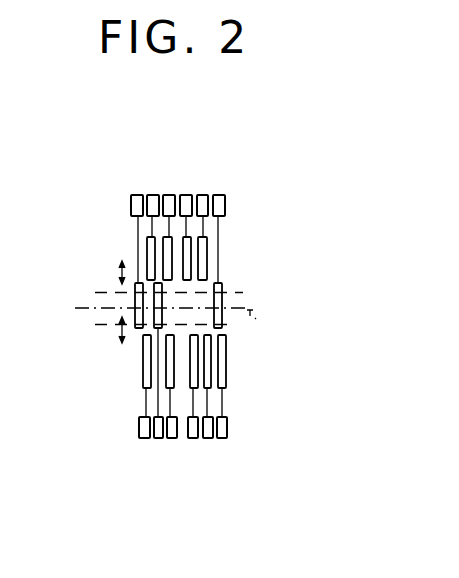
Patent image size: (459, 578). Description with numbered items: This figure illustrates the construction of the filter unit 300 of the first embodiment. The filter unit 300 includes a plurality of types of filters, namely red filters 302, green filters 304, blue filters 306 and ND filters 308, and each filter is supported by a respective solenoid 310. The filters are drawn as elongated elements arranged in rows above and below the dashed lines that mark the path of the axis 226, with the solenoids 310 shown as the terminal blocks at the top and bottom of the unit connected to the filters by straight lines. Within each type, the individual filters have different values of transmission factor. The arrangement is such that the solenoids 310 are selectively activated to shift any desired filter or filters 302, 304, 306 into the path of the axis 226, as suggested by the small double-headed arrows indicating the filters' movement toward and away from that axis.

The filter unit 300 is at (269, 373).
The red filters 302 is at (136, 282).
The green filters 304 is at (219, 281).
The blue filters 306 is at (221, 390).
The ND filters 308 is at (172, 371).
The solenoids 310 is at (190, 194).
The axis 226 is at (255, 321).